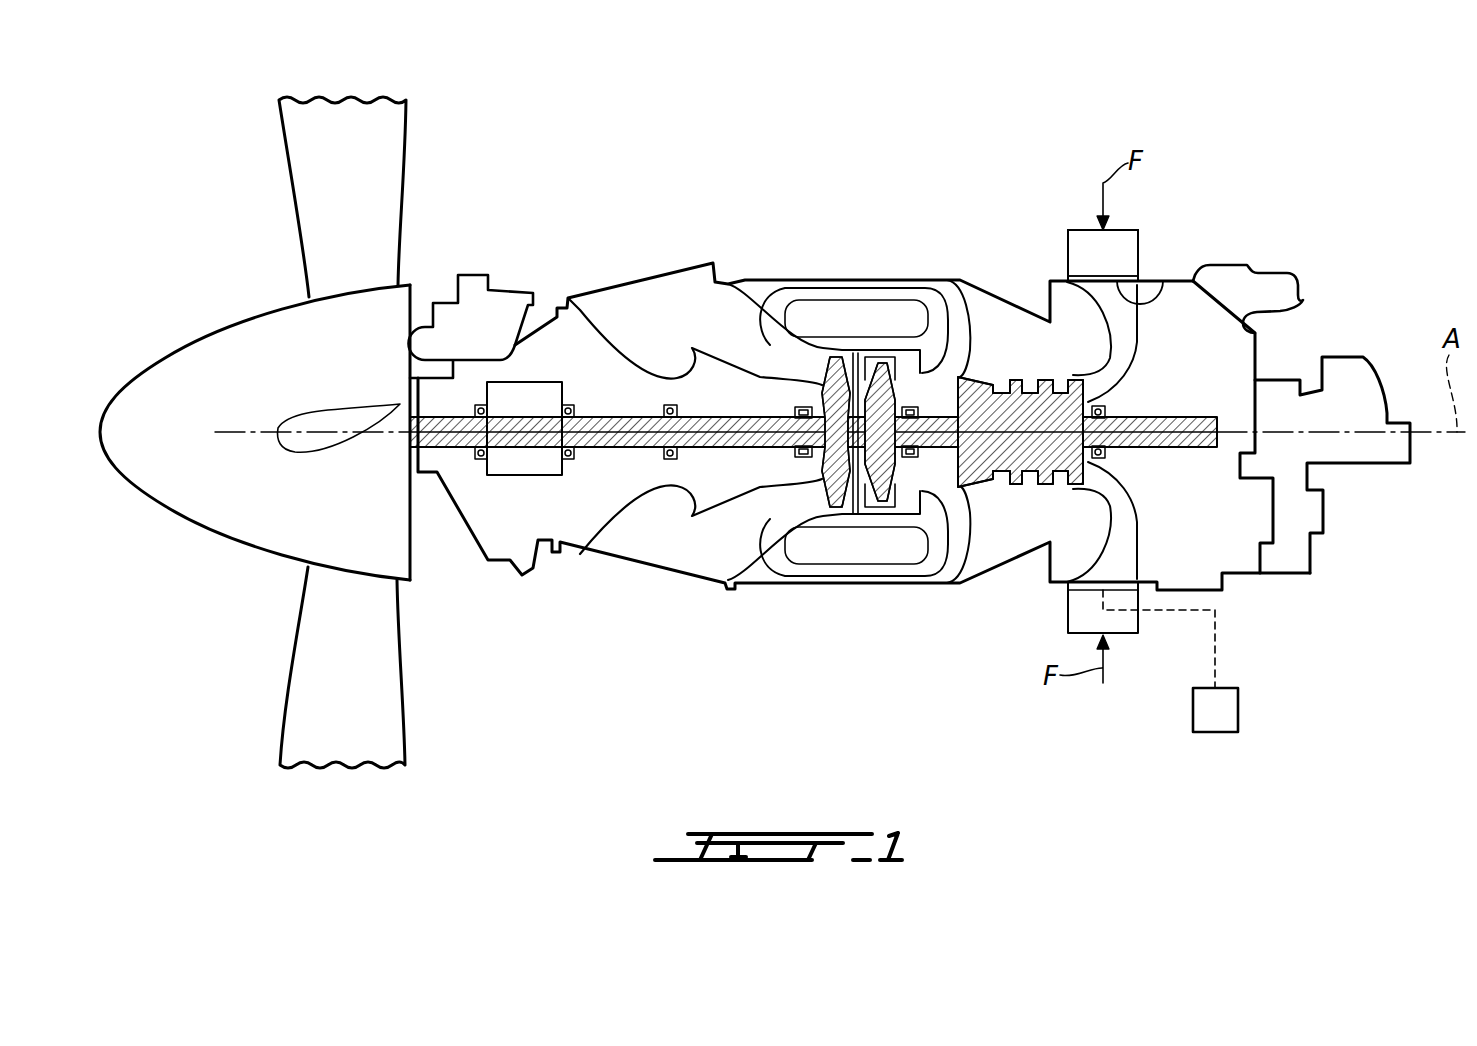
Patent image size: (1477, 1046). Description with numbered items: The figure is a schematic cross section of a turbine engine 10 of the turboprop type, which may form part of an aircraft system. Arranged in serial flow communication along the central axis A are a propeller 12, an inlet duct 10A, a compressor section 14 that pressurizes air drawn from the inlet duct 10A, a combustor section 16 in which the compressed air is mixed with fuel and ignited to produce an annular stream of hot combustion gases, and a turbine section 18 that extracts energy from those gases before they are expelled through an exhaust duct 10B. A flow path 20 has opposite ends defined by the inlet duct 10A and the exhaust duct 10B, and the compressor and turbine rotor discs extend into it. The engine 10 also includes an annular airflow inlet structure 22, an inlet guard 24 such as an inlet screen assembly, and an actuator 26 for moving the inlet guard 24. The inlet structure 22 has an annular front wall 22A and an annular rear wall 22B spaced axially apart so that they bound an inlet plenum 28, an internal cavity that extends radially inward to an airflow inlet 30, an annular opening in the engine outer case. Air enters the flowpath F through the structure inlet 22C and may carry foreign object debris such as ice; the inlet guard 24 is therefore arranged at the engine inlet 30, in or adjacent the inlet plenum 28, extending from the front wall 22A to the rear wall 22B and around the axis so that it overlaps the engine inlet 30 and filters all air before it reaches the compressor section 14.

The turbine engine 10 is at (203, 157).
The inlet duct 10A is at (1137, 553).
The exhaust duct 10B is at (635, 558).
The propeller 12 is at (313, 716).
The compressor section 14 is at (1033, 514).
The combustor section 16 is at (857, 552).
The turbine section 18 is at (806, 503).
The flow path 20 is at (714, 336).
The airflow inlet structure 22 is at (1150, 223).
The front wall 22A is at (1068, 247).
The rear wall 22B is at (1138, 247).
The structure inlet 22C is at (1080, 230).
The inlet guard 24 is at (1085, 276).
The actuator 26 is at (1238, 712).
The inlet plenum 28 is at (1118, 268).
The airflow inlet 30 is at (1140, 298).